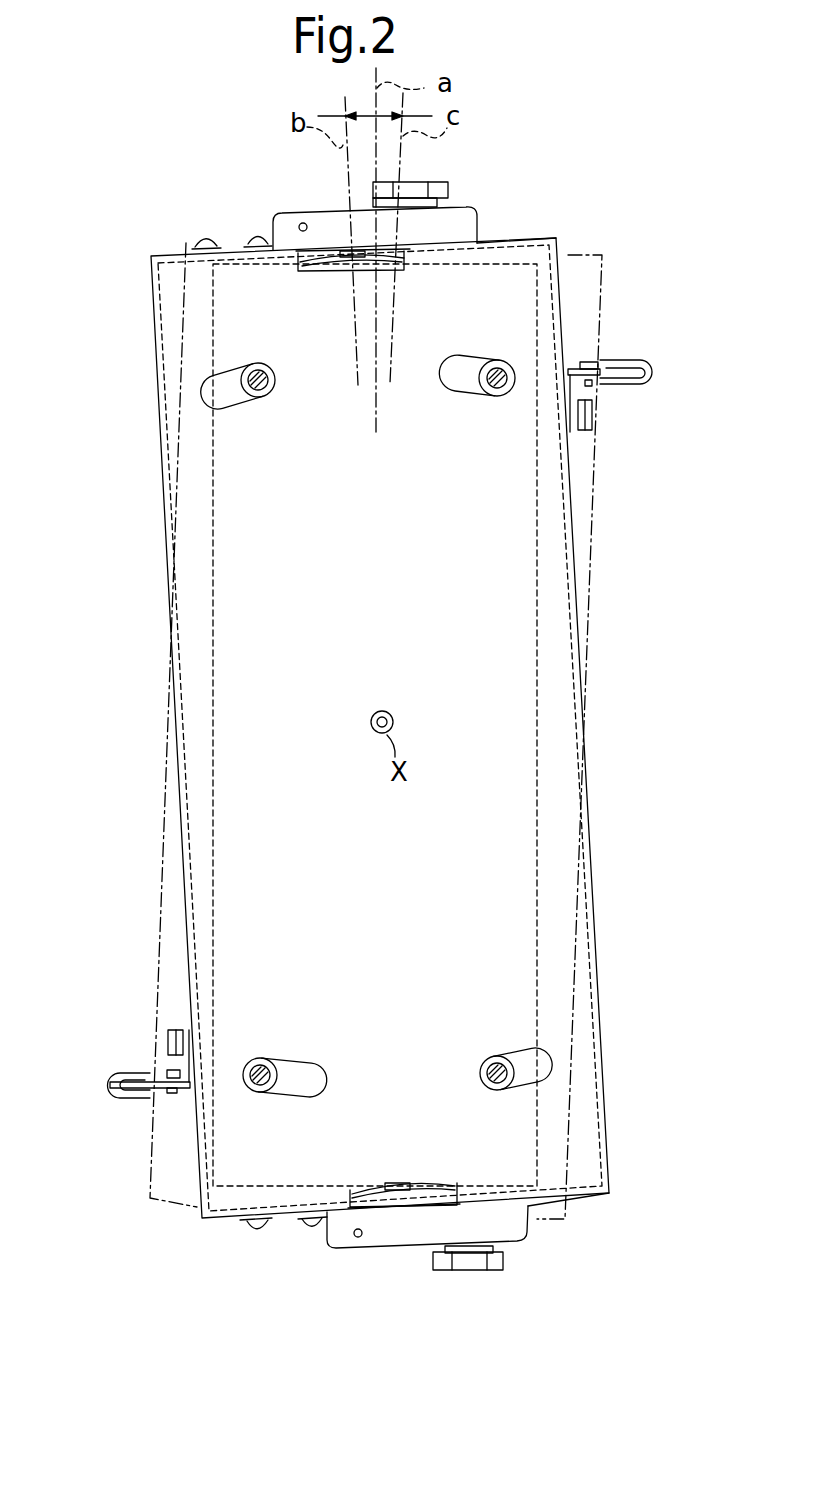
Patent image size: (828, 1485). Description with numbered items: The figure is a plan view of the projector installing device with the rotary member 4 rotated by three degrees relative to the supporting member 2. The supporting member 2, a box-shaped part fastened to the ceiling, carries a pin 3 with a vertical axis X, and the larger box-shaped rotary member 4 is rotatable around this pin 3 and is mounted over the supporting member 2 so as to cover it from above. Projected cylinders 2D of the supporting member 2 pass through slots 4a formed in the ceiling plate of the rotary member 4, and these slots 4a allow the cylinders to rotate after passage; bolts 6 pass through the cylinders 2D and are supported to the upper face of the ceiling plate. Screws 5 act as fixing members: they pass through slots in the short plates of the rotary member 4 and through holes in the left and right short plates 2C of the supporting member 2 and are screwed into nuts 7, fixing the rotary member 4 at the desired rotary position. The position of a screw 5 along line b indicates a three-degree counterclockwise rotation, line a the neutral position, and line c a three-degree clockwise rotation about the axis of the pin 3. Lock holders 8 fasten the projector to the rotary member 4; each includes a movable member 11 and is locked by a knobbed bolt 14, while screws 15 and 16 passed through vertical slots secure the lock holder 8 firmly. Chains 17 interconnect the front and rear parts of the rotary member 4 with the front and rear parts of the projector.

The supporting member 2 is at (538, 813).
The left and right short plates 2C is at (300, 275).
The projected cylinders 2D is at (265, 398).
The pin 3 is at (394, 715).
The rotary member 4 is at (590, 568).
The slots 4a is at (214, 405).
The screws 5 is at (352, 250).
The bolts 6 is at (258, 364).
The nuts 7 is at (334, 273).
The lock holders 8 is at (477, 212).
The movable member 11 is at (480, 215).
The knobbed bolts 14 is at (441, 186).
The screw 15 is at (258, 238).
The screw 16 is at (205, 240).
The chains 17 is at (626, 385).